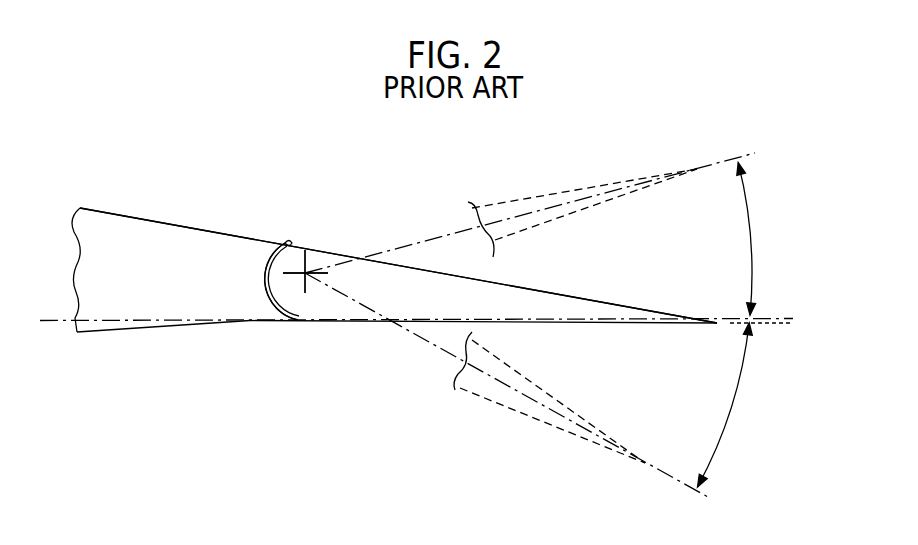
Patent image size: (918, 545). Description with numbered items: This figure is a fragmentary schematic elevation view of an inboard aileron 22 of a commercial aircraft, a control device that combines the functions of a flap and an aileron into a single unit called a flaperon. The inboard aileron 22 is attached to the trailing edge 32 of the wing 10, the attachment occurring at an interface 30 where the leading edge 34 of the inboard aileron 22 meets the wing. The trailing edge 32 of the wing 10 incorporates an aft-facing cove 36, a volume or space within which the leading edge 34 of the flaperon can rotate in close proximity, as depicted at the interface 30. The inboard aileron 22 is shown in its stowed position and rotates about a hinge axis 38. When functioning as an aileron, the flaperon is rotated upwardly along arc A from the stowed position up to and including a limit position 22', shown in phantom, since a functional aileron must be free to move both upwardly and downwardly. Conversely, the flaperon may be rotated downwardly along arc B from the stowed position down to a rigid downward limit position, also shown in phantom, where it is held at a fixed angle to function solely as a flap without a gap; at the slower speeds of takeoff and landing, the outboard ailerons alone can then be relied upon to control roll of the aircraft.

The wing 10 is at (172, 200).
The inboard aileron 22 is at (398, 265).
The limit position 22' is at (530, 200).
The interface 30 is at (298, 212).
The trailing edge 32 is at (255, 245).
The leading edge 34 is at (270, 298).
The aft-facing cove 36 is at (292, 241).
The hinge axis 38 is at (309, 279).
The arc A is at (752, 239).
The arc B is at (731, 406).